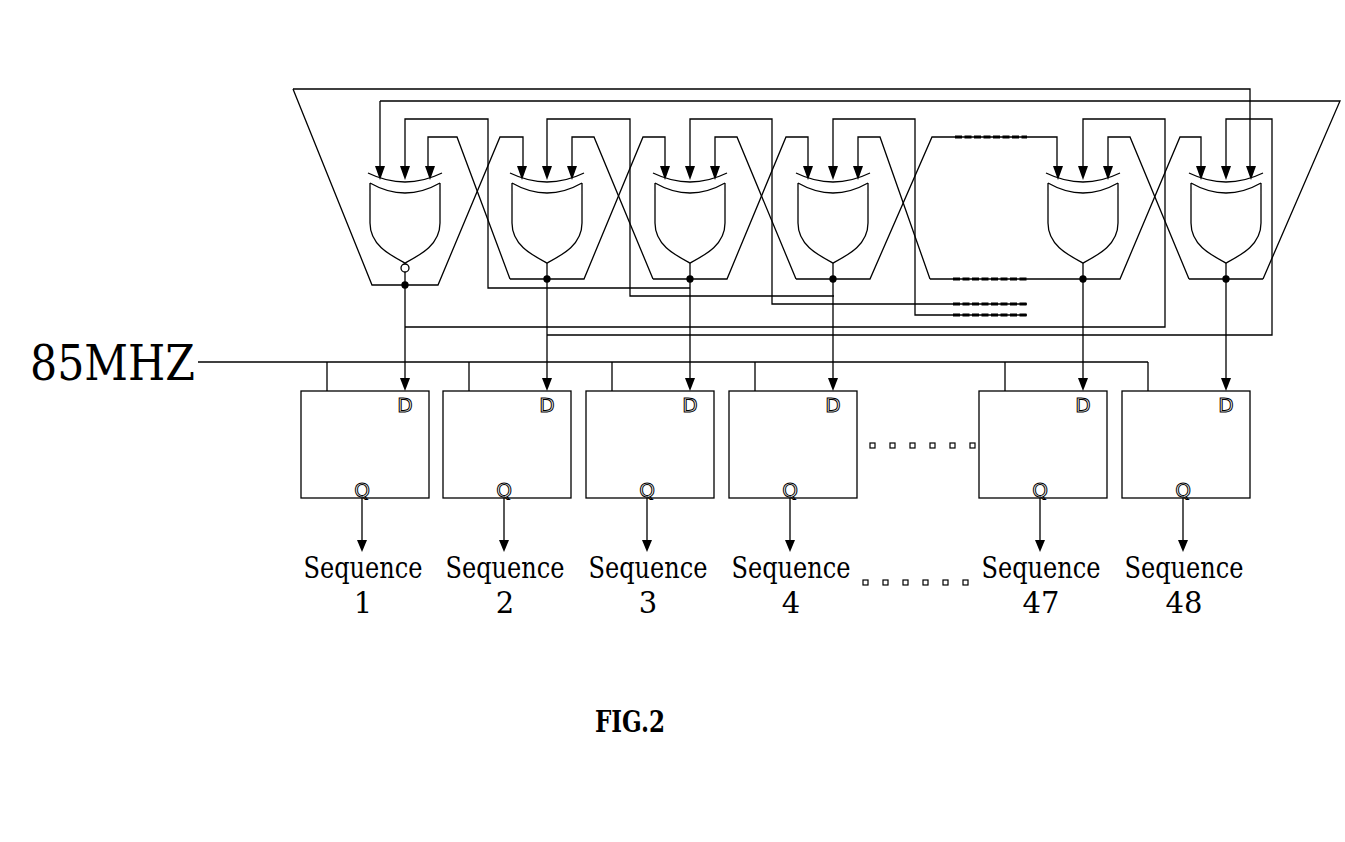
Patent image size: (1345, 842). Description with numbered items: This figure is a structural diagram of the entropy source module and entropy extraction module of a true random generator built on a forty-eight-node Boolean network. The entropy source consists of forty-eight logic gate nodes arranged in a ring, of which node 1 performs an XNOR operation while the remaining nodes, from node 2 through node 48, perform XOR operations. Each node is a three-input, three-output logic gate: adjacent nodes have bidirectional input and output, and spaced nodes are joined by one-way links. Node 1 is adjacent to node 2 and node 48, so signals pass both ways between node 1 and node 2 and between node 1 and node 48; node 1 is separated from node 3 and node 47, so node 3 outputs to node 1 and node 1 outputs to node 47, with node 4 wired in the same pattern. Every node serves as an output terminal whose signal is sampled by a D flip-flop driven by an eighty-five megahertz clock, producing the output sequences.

The node 1 is at (405, 227).
The node 2 is at (547, 224).
The node 3 is at (690, 224).
The node 4 is at (833, 224).
The node 47 is at (1083, 224).
The node 48 is at (1226, 224).